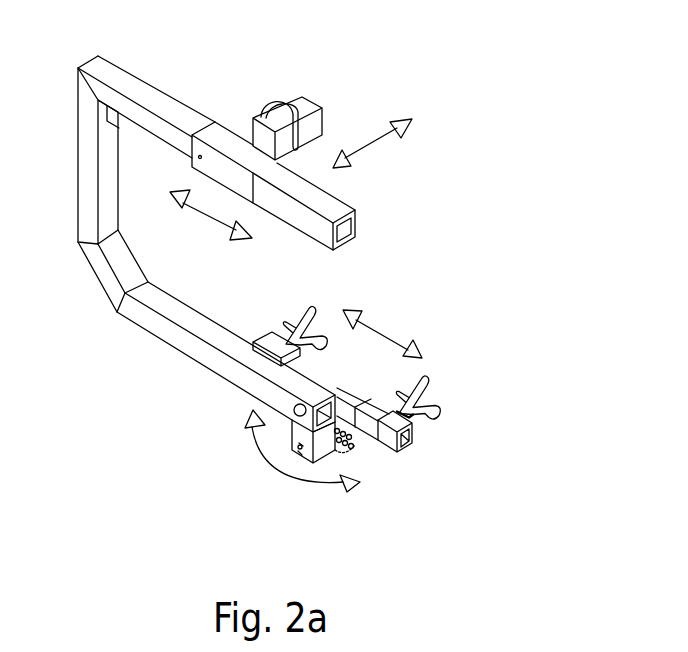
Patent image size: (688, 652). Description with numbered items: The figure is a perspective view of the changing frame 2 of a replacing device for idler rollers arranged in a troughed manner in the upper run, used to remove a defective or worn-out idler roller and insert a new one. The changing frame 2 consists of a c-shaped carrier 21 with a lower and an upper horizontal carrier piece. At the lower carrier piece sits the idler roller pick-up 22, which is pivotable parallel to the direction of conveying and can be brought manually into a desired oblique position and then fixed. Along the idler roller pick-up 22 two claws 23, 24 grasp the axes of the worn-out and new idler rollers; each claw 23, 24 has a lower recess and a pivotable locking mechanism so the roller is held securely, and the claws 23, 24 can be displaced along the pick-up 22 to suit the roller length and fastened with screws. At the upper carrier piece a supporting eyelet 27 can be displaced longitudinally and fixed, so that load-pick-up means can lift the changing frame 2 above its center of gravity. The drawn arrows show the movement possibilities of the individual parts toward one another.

The changing frame 2 is at (131, 379).
The carrier 21 is at (203, 355).
The idler roller pick-up 22 is at (390, 450).
The claw 23 is at (316, 312).
The claw 24 is at (423, 377).
The supporting eyelet 27 is at (281, 100).